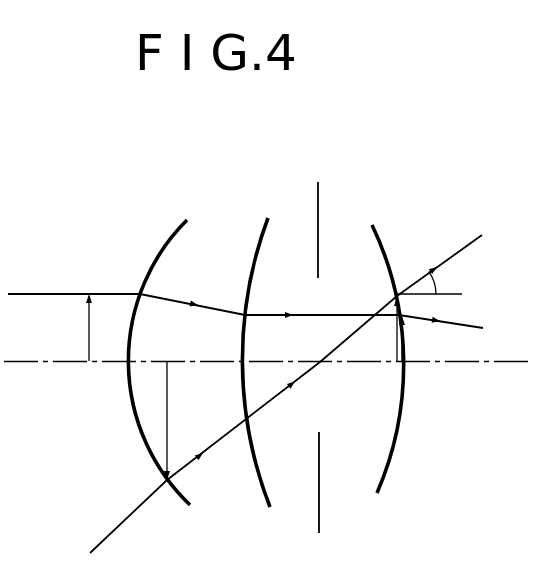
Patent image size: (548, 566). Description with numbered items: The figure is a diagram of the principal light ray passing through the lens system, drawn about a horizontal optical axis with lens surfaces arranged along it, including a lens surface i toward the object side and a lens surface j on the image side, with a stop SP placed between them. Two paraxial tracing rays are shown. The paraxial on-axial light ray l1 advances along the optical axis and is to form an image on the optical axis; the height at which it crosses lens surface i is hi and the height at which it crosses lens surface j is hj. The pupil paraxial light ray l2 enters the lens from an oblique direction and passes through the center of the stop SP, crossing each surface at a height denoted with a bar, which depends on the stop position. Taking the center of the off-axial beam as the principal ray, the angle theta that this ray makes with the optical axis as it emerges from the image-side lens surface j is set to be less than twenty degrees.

The lens surface i is at (159, 343).
The lens surface j is at (388, 340).
The stop SP is at (318, 218).
The paraxial on-axial light ray l1 is at (58, 293).
The pupil paraxial light ray l2 is at (118, 526).
The height h at lens surface i hi is at (79, 327).
The height h at lens surface j hj is at (405, 338).
The angle of the principal light ray theta is at (429, 280).